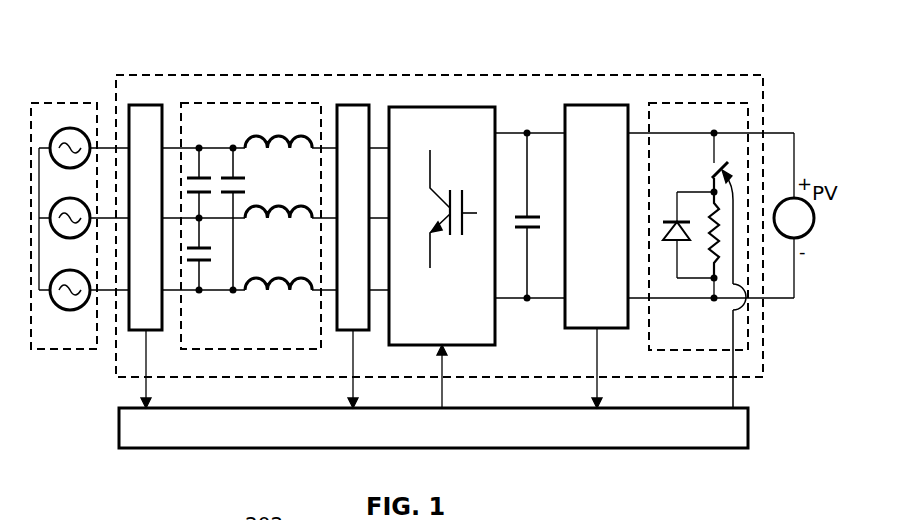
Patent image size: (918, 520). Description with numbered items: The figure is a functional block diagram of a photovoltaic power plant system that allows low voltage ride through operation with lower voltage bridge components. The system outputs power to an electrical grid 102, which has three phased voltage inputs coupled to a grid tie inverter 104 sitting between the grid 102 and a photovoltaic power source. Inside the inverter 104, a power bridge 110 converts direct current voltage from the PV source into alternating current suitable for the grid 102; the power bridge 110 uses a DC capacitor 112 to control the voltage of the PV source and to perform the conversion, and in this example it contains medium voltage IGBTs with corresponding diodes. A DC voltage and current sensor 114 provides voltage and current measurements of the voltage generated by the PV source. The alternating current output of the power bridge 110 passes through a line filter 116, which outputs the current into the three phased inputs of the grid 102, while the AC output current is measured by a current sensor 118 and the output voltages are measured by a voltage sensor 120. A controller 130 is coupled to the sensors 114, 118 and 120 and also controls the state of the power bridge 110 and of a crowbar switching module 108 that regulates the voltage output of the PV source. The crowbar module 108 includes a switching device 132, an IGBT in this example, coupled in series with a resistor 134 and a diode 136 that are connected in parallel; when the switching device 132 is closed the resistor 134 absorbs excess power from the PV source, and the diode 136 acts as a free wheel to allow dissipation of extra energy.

The electrical grid 102 is at (50, 102).
The grid tie inverter 104 is at (300, 74).
The crowbar switching module 108 is at (733, 103).
The power bridge 110 is at (427, 107).
The DC capacitor 112 is at (520, 208).
The DC voltage and current sensor 114 is at (583, 105).
The line filter 116 is at (237, 102).
The current sensor 118 is at (350, 104).
The voltage sensor 120 is at (142, 105).
The controller 130 is at (133, 450).
The switching device 132 is at (712, 165).
The resistor 134 is at (720, 247).
The diode 136 is at (670, 225).